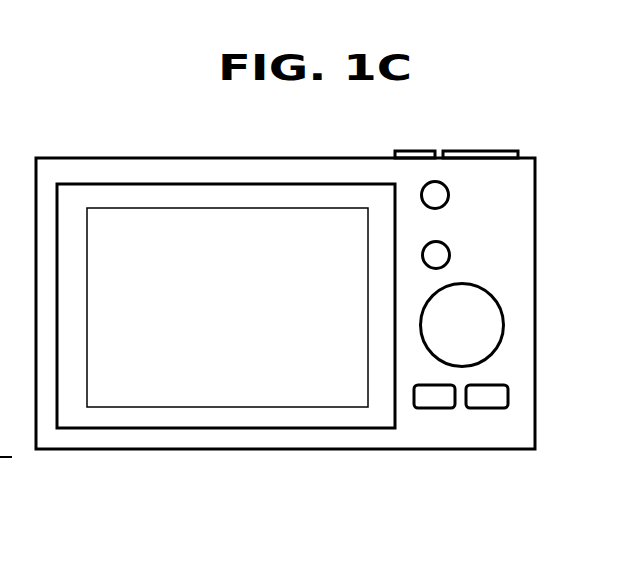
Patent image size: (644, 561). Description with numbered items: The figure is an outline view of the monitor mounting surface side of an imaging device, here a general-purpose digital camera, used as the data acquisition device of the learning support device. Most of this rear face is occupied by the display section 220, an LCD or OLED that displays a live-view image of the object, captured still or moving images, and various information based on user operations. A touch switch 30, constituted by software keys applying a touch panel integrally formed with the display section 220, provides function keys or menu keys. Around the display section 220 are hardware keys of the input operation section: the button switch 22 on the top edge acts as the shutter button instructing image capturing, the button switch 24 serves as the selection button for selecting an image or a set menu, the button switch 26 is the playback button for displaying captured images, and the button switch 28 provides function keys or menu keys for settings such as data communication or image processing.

The display section 220 is at (118, 228).
The button switch 22 is at (413, 151).
The button switch 24 is at (547, 235).
The button switch 26 is at (434, 408).
The button switch 28 is at (488, 408).
The touch switch 30 is at (368, 466).